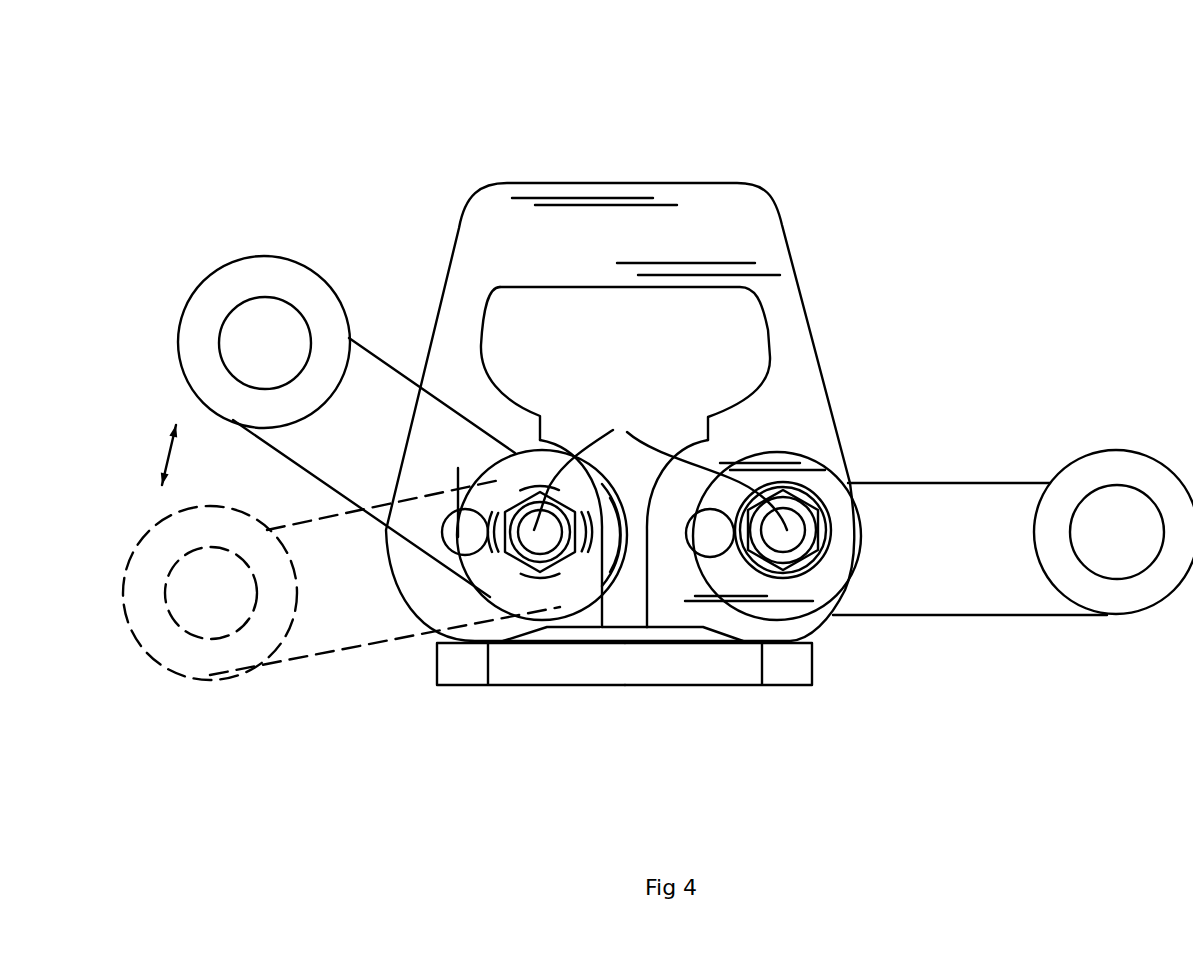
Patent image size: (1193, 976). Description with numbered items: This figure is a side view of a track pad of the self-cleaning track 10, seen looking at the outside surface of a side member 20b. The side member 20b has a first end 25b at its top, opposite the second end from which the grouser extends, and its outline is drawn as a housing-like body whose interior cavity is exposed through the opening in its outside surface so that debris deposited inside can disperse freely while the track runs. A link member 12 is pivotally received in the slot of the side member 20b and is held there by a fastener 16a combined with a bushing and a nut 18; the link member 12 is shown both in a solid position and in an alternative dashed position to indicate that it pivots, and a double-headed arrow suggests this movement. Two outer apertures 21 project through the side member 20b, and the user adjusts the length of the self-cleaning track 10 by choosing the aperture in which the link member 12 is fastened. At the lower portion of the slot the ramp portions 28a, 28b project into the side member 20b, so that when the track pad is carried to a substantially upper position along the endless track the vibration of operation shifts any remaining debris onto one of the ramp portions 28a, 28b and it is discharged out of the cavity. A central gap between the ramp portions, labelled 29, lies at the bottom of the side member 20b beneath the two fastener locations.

The self-cleaning track 10 is at (910, 321).
The link member 12 is at (287, 277).
The fastener 16a is at (660, 456).
The nut 18 is at (538, 526).
The side member 20b is at (827, 378).
The outer aperture 21 is at (490, 597).
The first end 25b is at (673, 183).
The ramp portion 28a is at (511, 640).
The ramp portion 28b is at (722, 633).
The slot 29 is at (630, 630).